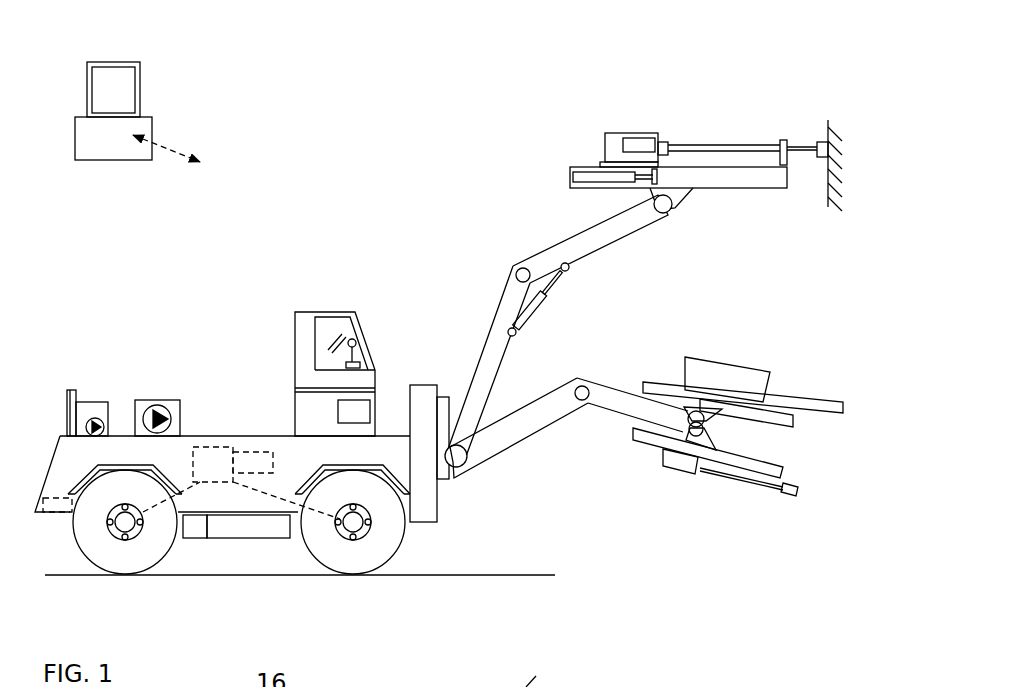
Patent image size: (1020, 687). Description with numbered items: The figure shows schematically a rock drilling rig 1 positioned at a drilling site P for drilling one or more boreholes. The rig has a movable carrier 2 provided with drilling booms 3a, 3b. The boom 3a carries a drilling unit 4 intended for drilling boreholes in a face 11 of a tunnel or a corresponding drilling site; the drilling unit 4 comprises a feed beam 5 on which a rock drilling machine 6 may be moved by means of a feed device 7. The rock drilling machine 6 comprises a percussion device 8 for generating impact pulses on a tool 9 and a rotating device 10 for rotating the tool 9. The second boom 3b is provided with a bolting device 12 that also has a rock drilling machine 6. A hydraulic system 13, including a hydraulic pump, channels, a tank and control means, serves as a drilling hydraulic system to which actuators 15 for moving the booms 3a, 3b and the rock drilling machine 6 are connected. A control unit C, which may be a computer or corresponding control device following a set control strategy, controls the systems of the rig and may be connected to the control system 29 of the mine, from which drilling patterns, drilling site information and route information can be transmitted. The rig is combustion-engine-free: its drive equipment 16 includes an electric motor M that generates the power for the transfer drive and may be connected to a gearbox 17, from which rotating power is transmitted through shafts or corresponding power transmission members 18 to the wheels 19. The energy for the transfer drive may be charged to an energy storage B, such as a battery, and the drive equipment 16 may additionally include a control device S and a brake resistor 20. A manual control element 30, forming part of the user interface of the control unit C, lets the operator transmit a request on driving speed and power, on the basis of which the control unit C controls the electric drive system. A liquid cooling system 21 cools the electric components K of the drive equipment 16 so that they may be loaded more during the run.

The rock drilling rig 1 is at (328, 218).
The movable carrier 2 is at (218, 295).
The drilling boom 3a is at (498, 322).
The drilling boom 3b is at (520, 423).
The drilling unit 4 is at (716, 76).
The feed beam 5 is at (722, 185).
The rock drilling machine 6 is at (683, 460).
The feed device 7 is at (590, 188).
The percussion device 8 is at (603, 142).
The tool 9 is at (745, 147).
The rotating device 10 is at (642, 142).
The face 11 is at (564, 84).
The bolting device 12 is at (668, 348).
The hydraulic system 13 is at (150, 392).
The actuators 15 is at (548, 298).
The drive equipment 16 is at (243, 392).
The gearbox 17 is at (210, 458).
The power transmission members 18 is at (157, 507).
The wheels 19 is at (380, 545).
The brake resistor 20 is at (50, 508).
The liquid cooling system 21 is at (72, 375).
The control system of the mine 29 is at (178, 102).
The manual control element 30 is at (356, 324).
The control unit C is at (355, 410).
The electric motor M is at (258, 462).
The drilling site P is at (421, 277).
The control device S is at (198, 530).
The energy storage B is at (245, 527).
The electric components K is at (317, 588).